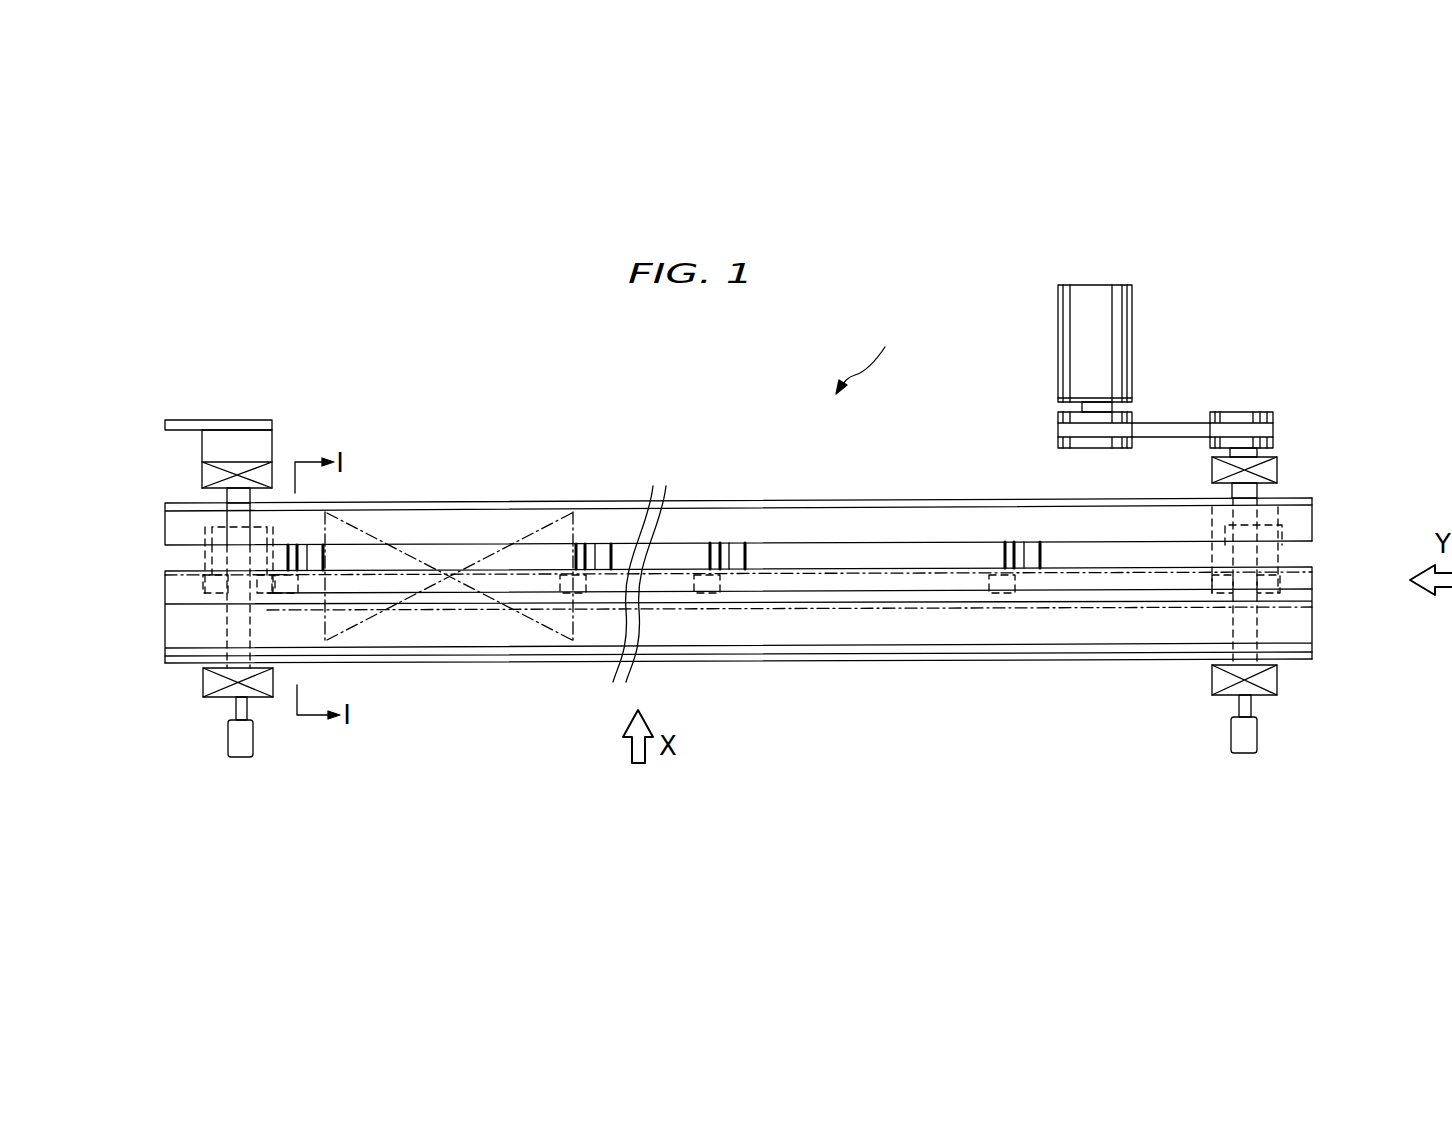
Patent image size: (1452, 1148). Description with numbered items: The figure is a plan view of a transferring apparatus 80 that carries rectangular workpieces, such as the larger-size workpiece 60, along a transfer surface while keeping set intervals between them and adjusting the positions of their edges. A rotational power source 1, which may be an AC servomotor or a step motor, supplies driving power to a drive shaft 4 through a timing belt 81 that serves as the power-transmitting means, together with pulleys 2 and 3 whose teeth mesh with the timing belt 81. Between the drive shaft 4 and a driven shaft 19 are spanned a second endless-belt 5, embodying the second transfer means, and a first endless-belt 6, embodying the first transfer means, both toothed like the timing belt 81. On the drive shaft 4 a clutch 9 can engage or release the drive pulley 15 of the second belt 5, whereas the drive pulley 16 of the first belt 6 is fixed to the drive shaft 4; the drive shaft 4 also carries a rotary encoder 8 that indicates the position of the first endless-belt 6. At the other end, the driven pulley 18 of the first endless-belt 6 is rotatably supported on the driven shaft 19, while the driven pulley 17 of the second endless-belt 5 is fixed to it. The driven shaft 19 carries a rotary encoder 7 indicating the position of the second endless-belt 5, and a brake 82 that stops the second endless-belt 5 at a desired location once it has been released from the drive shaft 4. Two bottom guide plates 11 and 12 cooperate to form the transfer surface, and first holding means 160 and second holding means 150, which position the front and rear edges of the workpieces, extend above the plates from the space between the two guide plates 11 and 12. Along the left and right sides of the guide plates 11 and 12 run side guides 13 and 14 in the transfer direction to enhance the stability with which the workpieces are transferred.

The rotational power source 1 is at (1115, 300).
The pulley 2 is at (1130, 422).
The pulley 3 is at (1225, 415).
The drive shaft 4 is at (1250, 490).
The second endless-belt 5 is at (665, 557).
The first endless-belt 6 is at (680, 585).
The rotary encoder 7 is at (232, 738).
The rotary encoder 8 is at (1247, 737).
The clutch 9 is at (1295, 512).
The bottom guide plate 11 is at (842, 522).
The bottom guide plate 12 is at (893, 628).
The side guide 13 is at (1312, 498).
The side guide 14 is at (1295, 648).
The drive pulley 15 is at (1290, 547).
The drive pulley 16 is at (1287, 582).
The driven pulley 17 is at (207, 543).
The driven pulley 18 is at (208, 597).
The driven shaft 19 is at (250, 497).
The workpiece 60 is at (580, 650).
The transferring apparatus 80 is at (917, 342).
The timing belt 81 is at (1178, 426).
The brake 82 is at (233, 440).
The second holding means 150 is at (315, 555).
The first holding means 160 is at (582, 545).